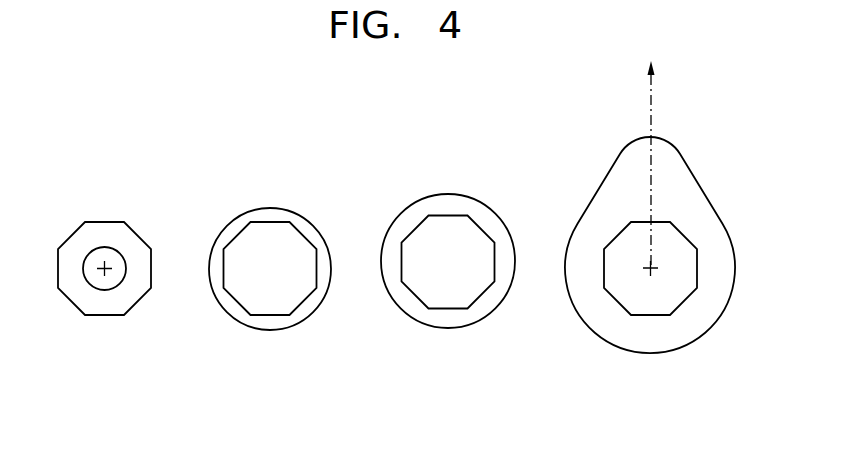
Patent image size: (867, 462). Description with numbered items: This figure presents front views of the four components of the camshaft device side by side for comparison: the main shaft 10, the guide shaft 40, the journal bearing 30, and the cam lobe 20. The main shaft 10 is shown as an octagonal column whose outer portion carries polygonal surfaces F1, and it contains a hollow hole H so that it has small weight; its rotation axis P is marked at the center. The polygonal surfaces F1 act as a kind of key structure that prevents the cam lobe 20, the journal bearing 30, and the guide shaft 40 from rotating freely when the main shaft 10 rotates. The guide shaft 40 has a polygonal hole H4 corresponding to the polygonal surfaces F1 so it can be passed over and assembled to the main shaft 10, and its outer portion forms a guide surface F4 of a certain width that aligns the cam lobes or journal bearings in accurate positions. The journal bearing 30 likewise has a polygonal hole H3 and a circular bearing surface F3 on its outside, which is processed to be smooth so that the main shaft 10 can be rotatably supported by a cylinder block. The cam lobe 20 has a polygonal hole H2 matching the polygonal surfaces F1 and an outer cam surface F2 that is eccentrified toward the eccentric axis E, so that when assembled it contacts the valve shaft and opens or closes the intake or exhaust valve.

The main shaft 10 is at (114, 300).
The cam lobe 20 is at (658, 252).
The journal bearing 30 is at (448, 288).
The guide shaft 40 is at (270, 295).
The rotation axis P is at (102, 266).
The polygonal surface F1 is at (123, 222).
The hollow hole H is at (123, 263).
The guide surface F4 is at (271, 208).
The polygonal hole H4 is at (316, 260).
The bearing surface F3 is at (449, 194).
The polygonal hole H3 is at (494, 258).
The cam surface F2 is at (712, 195).
The polygonal hole H2 is at (697, 260).
The eccentric axis E is at (653, 107).